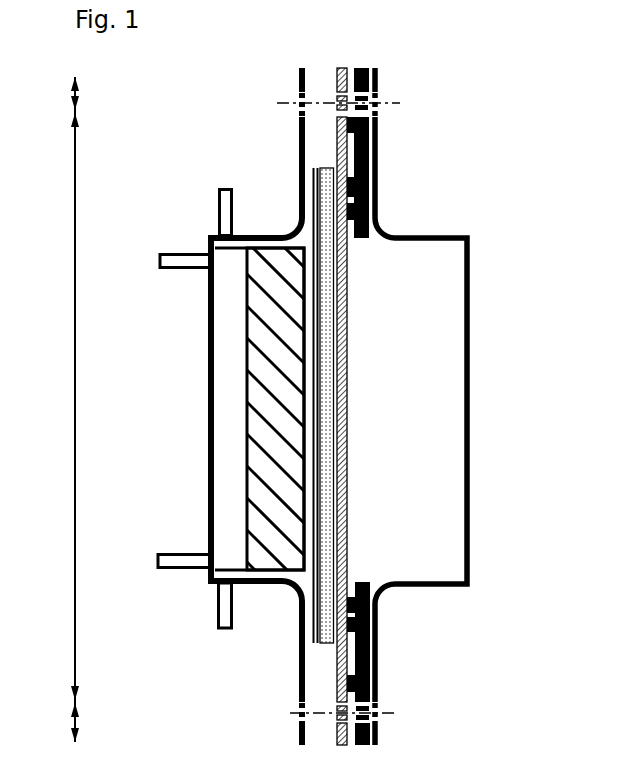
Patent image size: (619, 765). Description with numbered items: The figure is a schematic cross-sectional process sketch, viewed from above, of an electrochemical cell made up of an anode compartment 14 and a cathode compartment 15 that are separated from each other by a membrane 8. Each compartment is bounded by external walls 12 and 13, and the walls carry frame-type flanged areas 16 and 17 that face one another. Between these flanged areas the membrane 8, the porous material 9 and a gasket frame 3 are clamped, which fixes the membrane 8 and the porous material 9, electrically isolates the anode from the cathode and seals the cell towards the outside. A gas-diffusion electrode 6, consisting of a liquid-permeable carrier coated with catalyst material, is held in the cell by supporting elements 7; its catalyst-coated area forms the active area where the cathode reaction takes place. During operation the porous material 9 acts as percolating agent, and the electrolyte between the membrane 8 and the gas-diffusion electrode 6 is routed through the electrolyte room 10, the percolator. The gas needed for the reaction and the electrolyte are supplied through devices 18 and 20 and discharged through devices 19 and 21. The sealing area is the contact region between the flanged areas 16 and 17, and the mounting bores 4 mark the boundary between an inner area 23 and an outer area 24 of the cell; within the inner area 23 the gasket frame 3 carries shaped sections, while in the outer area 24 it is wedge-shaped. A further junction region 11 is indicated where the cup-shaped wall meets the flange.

The gasket frame 3 is at (377, 195).
The mounting bores 4 is at (382, 103).
The gas-diffusion electrode 6 is at (322, 422).
The supporting elements 7 is at (262, 385).
The membrane 8 is at (345, 342).
The porous material 9 is at (326, 205).
The electrolyte room 10 is at (377, 228).
The junction 11 is at (307, 238).
The external wall 12 is at (465, 372).
The external wall 13 is at (208, 325).
The anode compartment 14 is at (433, 449).
The cathode compartment 15 is at (230, 530).
The frame-type flanged area 16 is at (378, 143).
The frame-type flanged area 17 is at (299, 142).
The supply device 18 is at (182, 558).
The discharge device 19 is at (173, 260).
The supply device 20 is at (222, 227).
The discharge device 21 is at (222, 618).
The inner area 23 is at (60, 409).
The outer area 24 is at (60, 411).